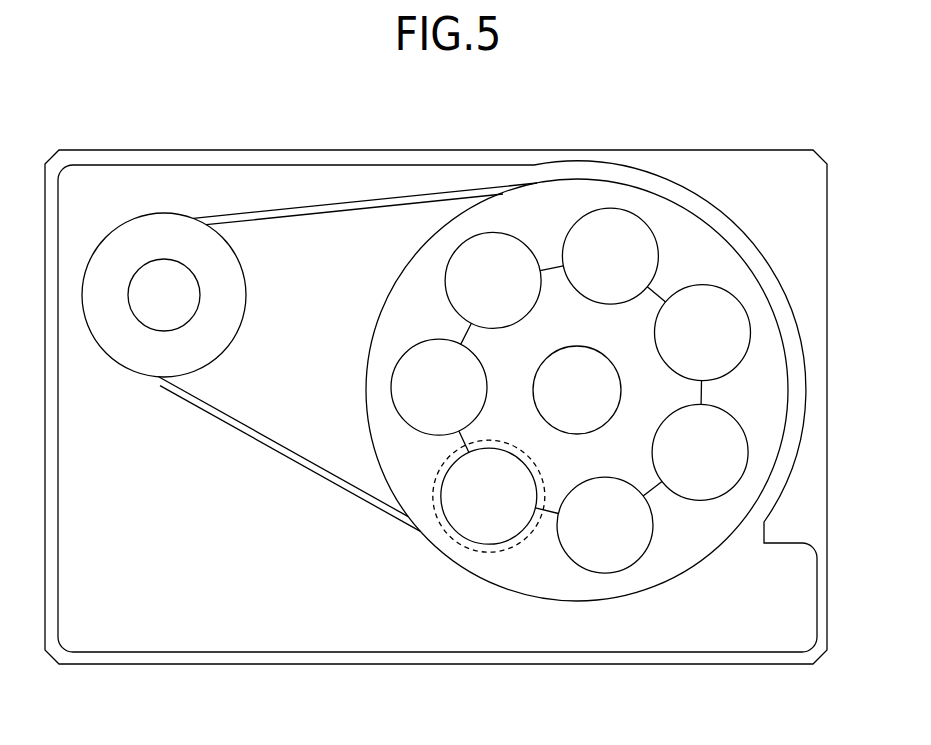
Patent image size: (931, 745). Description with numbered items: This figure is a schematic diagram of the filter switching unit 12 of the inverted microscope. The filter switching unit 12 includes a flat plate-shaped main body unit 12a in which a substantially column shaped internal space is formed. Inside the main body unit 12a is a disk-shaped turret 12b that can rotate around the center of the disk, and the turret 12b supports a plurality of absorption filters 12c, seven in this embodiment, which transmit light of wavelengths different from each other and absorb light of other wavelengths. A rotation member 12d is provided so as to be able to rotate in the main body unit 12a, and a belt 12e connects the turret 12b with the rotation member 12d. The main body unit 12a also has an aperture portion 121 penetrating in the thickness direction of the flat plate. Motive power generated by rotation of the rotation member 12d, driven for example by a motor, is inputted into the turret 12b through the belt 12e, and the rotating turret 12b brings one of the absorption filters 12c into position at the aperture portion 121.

The filter switching unit 12 is at (351, 158).
The main body unit 12a is at (737, 170).
The turret 12b is at (570, 192).
The absorption filter 12c is at (616, 222).
The rotation member 12d is at (162, 228).
The belt 12e is at (246, 432).
The aperture portion 121 is at (512, 548).